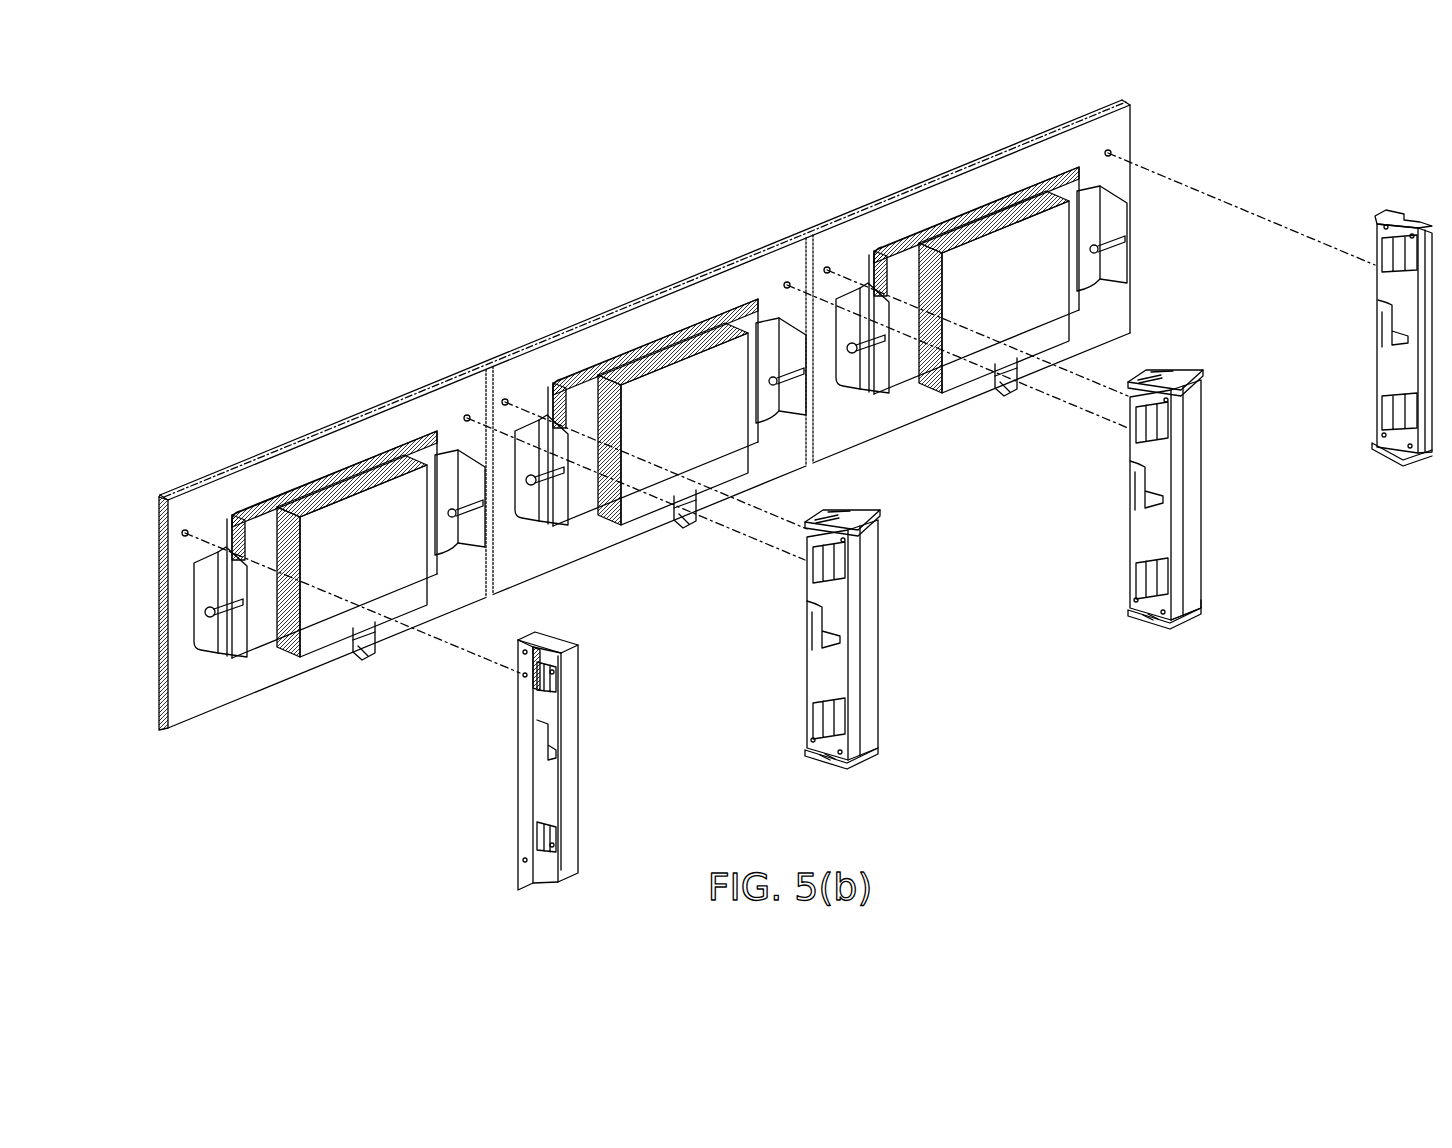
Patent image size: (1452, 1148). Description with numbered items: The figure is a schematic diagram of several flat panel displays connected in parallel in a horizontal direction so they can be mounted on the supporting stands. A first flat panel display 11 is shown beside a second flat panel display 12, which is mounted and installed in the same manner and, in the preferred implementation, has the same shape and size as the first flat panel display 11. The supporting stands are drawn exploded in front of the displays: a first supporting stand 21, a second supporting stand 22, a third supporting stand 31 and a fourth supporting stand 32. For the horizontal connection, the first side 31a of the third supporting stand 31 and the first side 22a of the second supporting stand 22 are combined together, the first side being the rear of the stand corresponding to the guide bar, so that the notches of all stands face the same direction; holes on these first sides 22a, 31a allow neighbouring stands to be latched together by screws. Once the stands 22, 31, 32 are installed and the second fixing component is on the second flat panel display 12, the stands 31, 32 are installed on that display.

The first flat panel display 11 is at (907, 192).
The second flat panel display 12 is at (609, 314).
The first supporting stand 21 is at (1433, 232).
The second supporting stand 22 is at (1187, 380).
The first side of the second supporting stand 22a is at (1200, 632).
The third supporting stand 31 is at (1128, 383).
The first side of the third supporting stand 31a is at (1174, 652).
The fourth supporting stand 32 is at (870, 510).